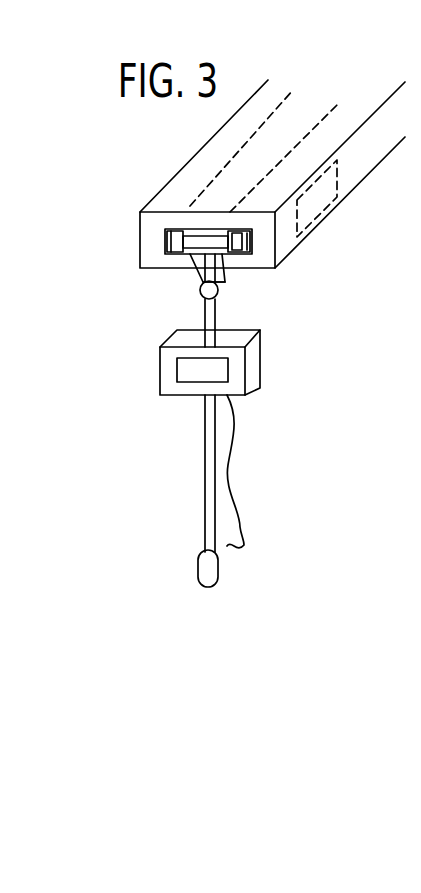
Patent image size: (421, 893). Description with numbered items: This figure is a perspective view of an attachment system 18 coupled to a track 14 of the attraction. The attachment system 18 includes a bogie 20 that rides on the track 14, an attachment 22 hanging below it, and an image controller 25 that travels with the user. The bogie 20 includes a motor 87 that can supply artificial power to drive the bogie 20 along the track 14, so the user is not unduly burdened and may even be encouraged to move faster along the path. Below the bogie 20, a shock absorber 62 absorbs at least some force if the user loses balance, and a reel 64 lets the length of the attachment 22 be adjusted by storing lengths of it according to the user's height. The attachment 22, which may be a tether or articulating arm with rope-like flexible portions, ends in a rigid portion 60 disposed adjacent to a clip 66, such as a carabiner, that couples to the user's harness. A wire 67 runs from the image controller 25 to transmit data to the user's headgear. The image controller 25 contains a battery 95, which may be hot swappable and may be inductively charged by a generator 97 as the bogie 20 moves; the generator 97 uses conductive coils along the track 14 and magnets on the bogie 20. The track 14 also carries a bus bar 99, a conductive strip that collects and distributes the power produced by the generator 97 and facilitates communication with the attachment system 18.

The track 14 is at (368, 174).
The attachment system 18 is at (162, 412).
The bogie 20 is at (173, 242).
The attachment 22 is at (210, 453).
The image controller 25 is at (253, 370).
The rigid portion 60 is at (192, 457).
The shock absorber 62 is at (202, 278).
The reel 64 is at (218, 292).
The clip 66 is at (218, 567).
The wire 67 is at (238, 500).
The motor 87 is at (207, 233).
The battery 95 is at (177, 370).
The generator 97 is at (337, 178).
The bus bar 99 is at (282, 102).